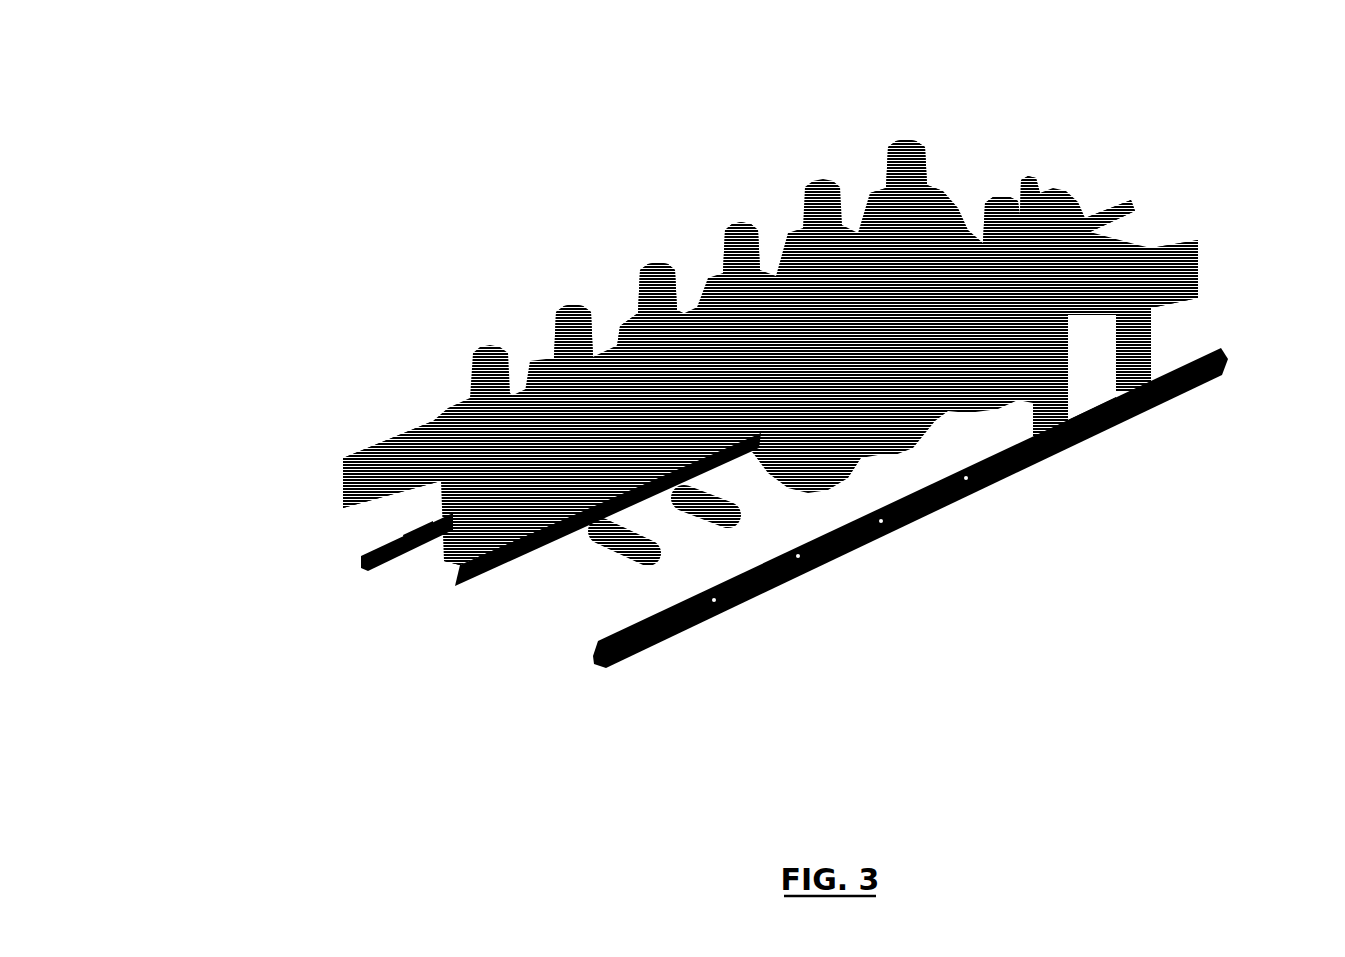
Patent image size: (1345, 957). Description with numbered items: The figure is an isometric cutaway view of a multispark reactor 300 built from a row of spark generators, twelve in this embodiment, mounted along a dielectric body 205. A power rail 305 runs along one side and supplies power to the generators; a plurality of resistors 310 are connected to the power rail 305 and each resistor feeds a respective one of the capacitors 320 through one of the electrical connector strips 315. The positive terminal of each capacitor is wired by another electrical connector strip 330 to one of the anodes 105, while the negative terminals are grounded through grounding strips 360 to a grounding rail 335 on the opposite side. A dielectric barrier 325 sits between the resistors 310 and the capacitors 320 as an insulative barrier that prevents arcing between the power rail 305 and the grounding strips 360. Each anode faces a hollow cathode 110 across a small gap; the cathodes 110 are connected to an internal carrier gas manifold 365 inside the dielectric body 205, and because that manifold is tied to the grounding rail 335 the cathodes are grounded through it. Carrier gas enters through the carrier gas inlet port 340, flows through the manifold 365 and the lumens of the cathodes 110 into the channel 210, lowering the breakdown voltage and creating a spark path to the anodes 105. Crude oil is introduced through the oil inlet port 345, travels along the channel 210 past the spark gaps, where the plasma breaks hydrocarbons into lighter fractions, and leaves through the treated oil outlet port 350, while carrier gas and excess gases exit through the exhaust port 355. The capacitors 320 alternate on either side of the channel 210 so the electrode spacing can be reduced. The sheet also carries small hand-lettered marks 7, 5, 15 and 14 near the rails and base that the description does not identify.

The multispark reactor 300 is at (170, 350).
The carrier gas manifold 365 is at (442, 388).
The cathodes 110 is at (521, 354).
The anodes 105 is at (602, 333).
The electrical connector strips 330 is at (668, 330).
The electrical connector strips 315 is at (730, 250).
The capacitors 320 is at (862, 190).
The dielectric body 205 is at (975, 227).
The exhaust port 355 is at (1022, 180).
The treated oil outlet port 350 is at (1102, 200).
The resistors 310 is at (1130, 260).
The dielectric barrier 325 is at (1180, 248).
The power rail 305 is at (957, 508).
The carrier gas inlet port 340 is at (386, 640).
The grounding rail 335 is at (581, 600).
The oil inlet port 345 is at (538, 479).
The grounding strips 360 is at (676, 617).
The channel 210 is at (524, 647).
The rail segment 7 is at (371, 574).
The carriage base 5 is at (394, 612).
The track segment 15 is at (459, 621).
The rail segment 14 is at (1148, 421).